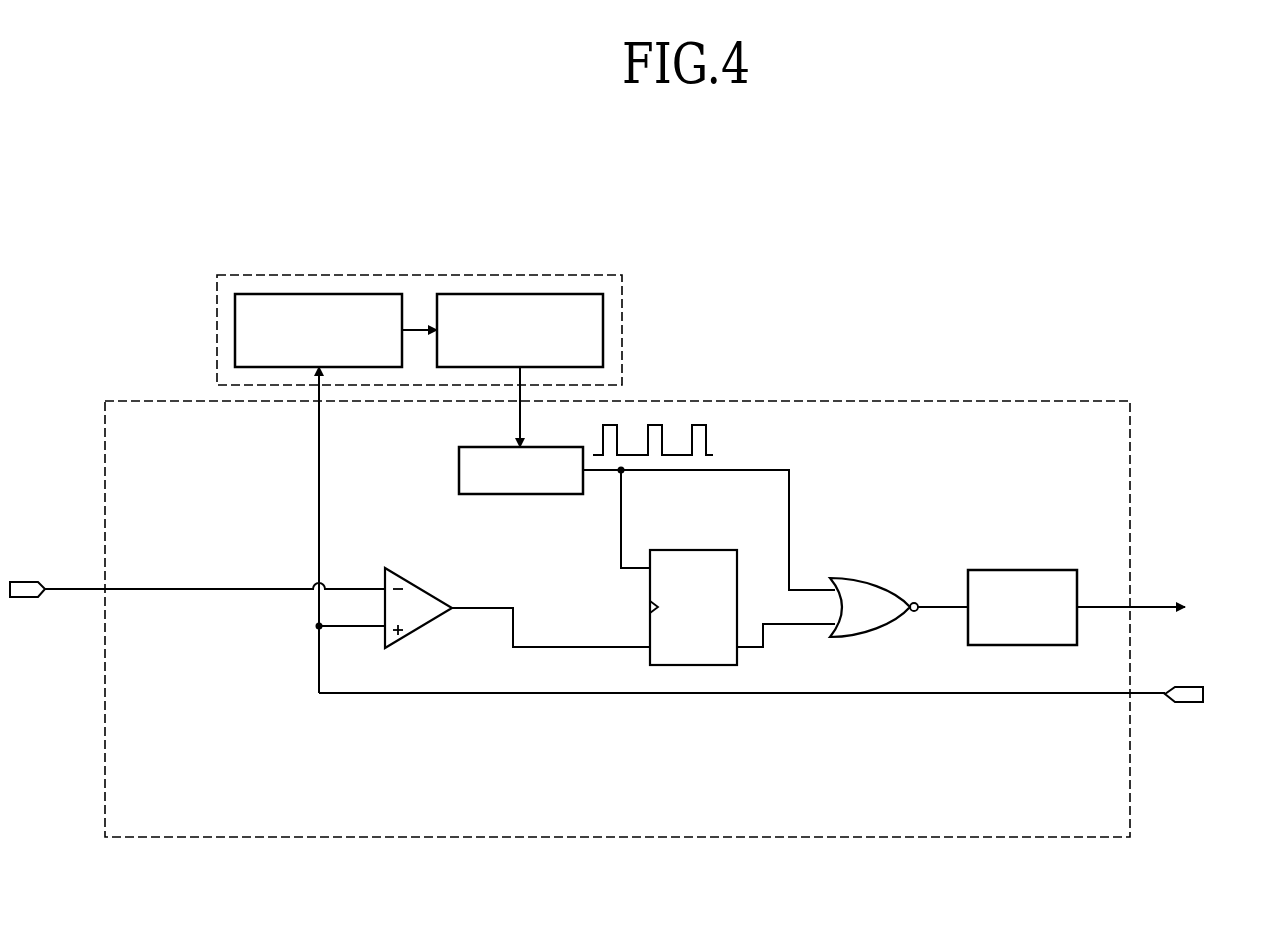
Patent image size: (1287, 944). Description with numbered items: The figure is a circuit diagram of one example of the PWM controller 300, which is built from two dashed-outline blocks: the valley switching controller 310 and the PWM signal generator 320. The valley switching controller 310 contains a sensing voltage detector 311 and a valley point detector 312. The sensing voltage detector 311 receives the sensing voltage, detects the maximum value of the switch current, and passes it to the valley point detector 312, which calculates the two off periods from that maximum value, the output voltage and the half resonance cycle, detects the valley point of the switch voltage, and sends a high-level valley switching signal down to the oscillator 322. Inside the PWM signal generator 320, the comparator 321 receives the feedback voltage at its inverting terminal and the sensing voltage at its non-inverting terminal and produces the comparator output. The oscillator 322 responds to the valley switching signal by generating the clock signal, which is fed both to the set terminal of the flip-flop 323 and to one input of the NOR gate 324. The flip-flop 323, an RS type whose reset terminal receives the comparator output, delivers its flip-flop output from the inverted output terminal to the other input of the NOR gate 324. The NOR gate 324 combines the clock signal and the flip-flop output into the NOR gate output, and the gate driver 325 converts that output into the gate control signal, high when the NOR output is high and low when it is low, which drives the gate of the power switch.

The switch controller 300 is at (807, 246).
The valley switching controller 310 is at (622, 330).
The sensing voltage detector 311 is at (316, 294).
The valley point detector 312 is at (518, 294).
The PWM signal generator 320 is at (865, 400).
The comparator 321 is at (432, 594).
The oscillator 322 is at (459, 468).
The flip-flop 323 is at (690, 550).
The NOR gate 324 is at (853, 578).
The gate driver 325 is at (1022, 570).